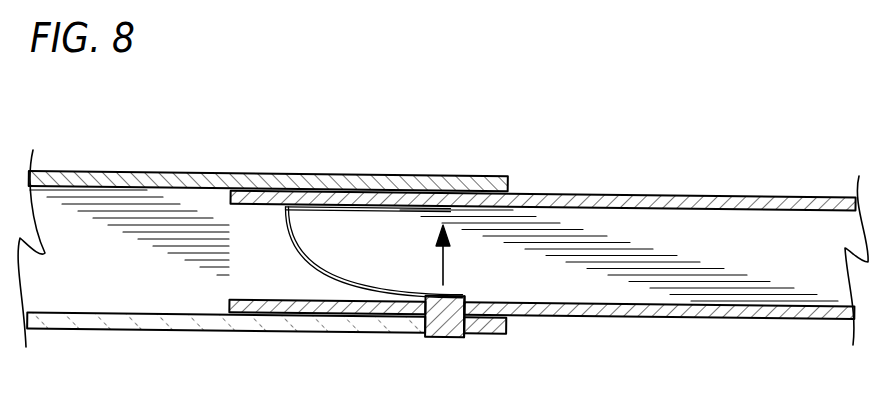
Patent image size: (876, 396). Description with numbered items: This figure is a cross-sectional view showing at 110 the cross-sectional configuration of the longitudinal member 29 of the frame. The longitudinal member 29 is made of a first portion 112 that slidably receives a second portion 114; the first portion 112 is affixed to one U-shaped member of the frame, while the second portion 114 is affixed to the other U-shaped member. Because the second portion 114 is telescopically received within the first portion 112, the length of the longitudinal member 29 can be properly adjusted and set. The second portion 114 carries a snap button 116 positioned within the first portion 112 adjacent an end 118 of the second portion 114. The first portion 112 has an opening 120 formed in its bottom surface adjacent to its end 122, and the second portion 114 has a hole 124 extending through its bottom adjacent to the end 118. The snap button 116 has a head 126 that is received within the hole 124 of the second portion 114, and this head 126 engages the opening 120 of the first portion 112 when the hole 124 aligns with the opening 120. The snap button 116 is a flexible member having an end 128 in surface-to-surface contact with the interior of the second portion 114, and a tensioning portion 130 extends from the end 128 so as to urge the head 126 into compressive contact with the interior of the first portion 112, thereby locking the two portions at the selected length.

The longitudinal member 29 is at (143, 172).
The cross-sectional configuration 110 is at (558, 177).
The first portion 112 is at (147, 330).
The second portion 114 is at (667, 318).
The snap button 116 is at (472, 297).
The end of the second portion 118 is at (213, 260).
The opening 120 is at (467, 338).
The end of the first portion 122 is at (490, 327).
The hole 124 is at (467, 299).
The head 126 is at (430, 338).
The end of the snap button 128 is at (330, 208).
The tensioning portion 130 is at (298, 255).